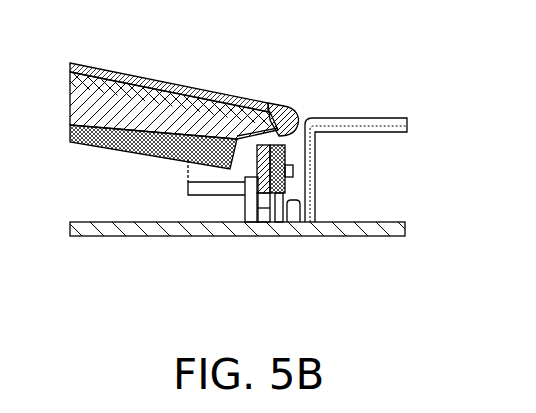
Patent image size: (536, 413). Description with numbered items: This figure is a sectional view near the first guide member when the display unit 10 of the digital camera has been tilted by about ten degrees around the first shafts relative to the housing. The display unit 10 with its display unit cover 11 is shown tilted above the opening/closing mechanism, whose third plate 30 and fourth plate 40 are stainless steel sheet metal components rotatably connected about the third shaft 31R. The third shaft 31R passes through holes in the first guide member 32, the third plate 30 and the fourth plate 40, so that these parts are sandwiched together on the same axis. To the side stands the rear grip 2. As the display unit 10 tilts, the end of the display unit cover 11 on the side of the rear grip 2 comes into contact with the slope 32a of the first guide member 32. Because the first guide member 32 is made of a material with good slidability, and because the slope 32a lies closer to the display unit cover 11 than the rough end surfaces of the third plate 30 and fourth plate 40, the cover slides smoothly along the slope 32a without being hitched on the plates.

The display unit 10 is at (174, 107).
The display unit cover 11 is at (298, 92).
The rear grip 2 is at (356, 140).
The first guide member 32 is at (192, 226).
The third shaft 31R is at (220, 245).
The third plate 30 is at (265, 222).
The fourth plate 40 is at (293, 244).
The slope 32a is at (330, 210).